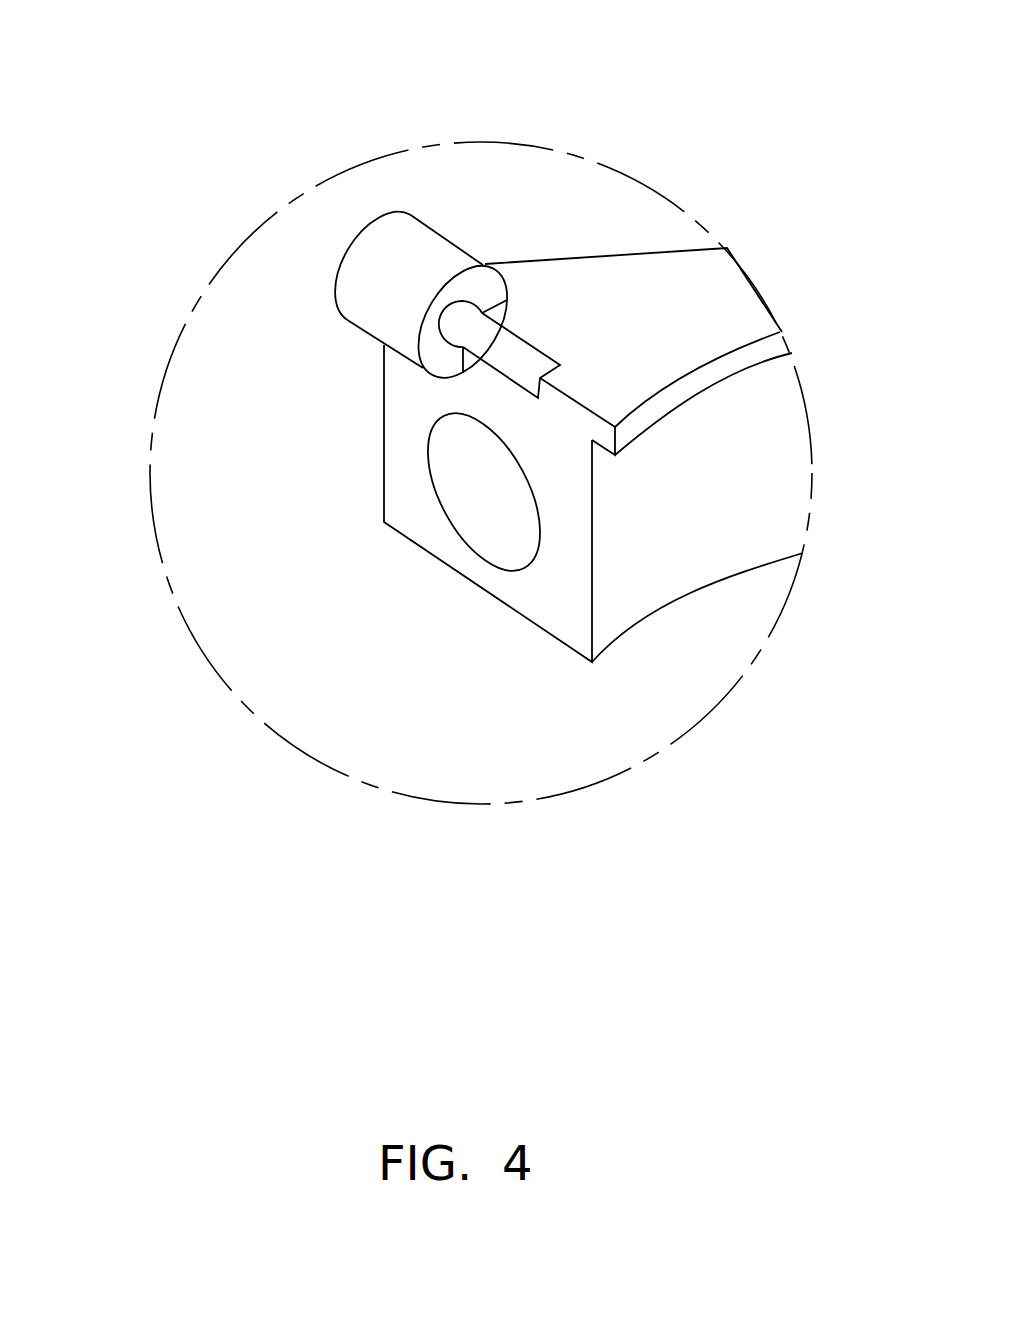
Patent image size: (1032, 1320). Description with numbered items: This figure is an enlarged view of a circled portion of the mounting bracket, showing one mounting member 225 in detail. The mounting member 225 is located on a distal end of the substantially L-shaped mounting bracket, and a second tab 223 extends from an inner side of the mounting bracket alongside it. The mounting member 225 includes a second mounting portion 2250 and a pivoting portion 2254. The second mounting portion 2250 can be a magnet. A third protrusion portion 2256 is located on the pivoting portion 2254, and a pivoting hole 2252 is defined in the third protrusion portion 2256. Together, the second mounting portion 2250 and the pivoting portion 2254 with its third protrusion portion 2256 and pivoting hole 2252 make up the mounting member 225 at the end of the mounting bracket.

The mounting member 225 is at (333, 382).
The second tab 223 is at (748, 362).
The second mounting portion 2250 is at (485, 528).
The pivoting portion 2254 is at (675, 78).
The third protrusion portion 2256 is at (425, 258).
The pivoting hole 2252 is at (502, 350).